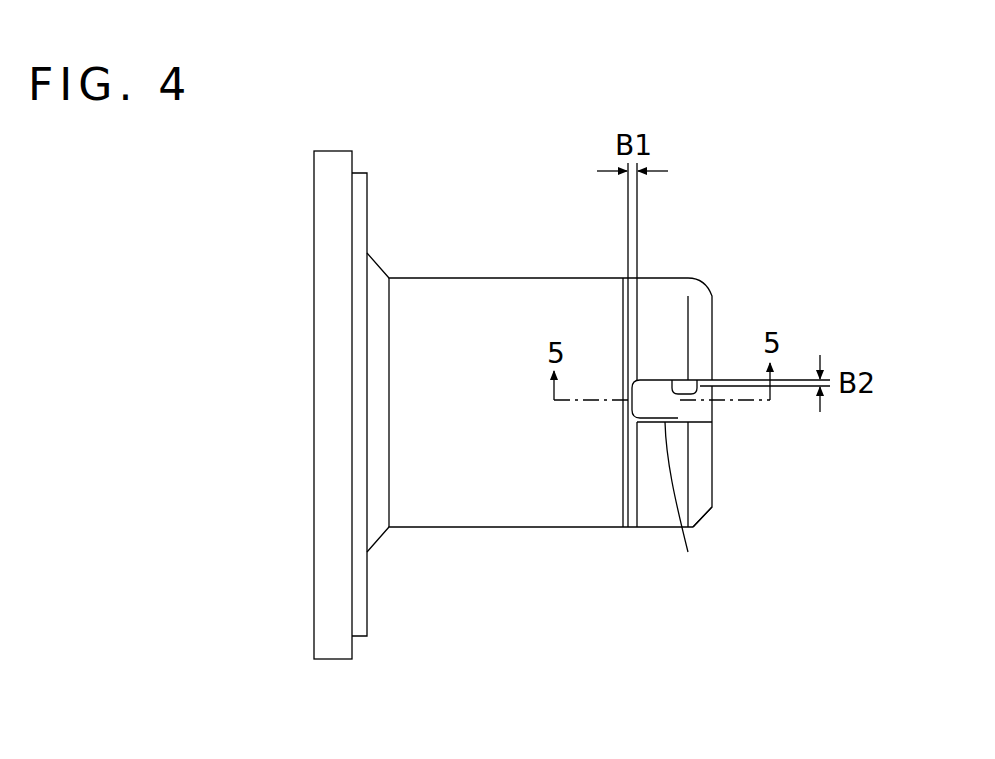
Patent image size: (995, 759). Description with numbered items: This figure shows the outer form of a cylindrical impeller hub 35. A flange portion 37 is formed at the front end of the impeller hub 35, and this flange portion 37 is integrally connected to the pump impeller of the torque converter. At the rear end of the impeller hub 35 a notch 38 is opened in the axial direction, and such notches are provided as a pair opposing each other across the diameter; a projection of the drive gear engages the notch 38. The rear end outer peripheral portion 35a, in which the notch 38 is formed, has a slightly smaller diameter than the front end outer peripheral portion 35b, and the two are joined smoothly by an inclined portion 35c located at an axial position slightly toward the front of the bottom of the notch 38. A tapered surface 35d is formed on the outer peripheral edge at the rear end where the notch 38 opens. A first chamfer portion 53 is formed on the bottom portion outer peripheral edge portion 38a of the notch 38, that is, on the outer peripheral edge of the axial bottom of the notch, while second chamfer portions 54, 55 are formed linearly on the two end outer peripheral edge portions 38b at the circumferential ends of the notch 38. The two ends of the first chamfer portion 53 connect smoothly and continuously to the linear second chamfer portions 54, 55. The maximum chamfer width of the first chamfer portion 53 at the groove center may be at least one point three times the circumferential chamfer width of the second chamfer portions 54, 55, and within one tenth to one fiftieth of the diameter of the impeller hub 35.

The impeller hub 35 is at (487, 272).
The rear end outer peripheral portion 35a is at (662, 508).
The front end outer peripheral portion 35b is at (519, 500).
The inclined portion 35c is at (628, 528).
The tapered surface 35d is at (696, 522).
The flange portion 37 is at (327, 252).
The notch 38 is at (697, 380).
The bottom portion outer peripheral edge portion 38a is at (645, 396).
The two end outer peripheral edge portions 38b is at (681, 416).
The first chamfer portion 53 is at (626, 399).
The second chamfer portion 54 is at (685, 378).
The second chamfer portion 55 is at (689, 505).